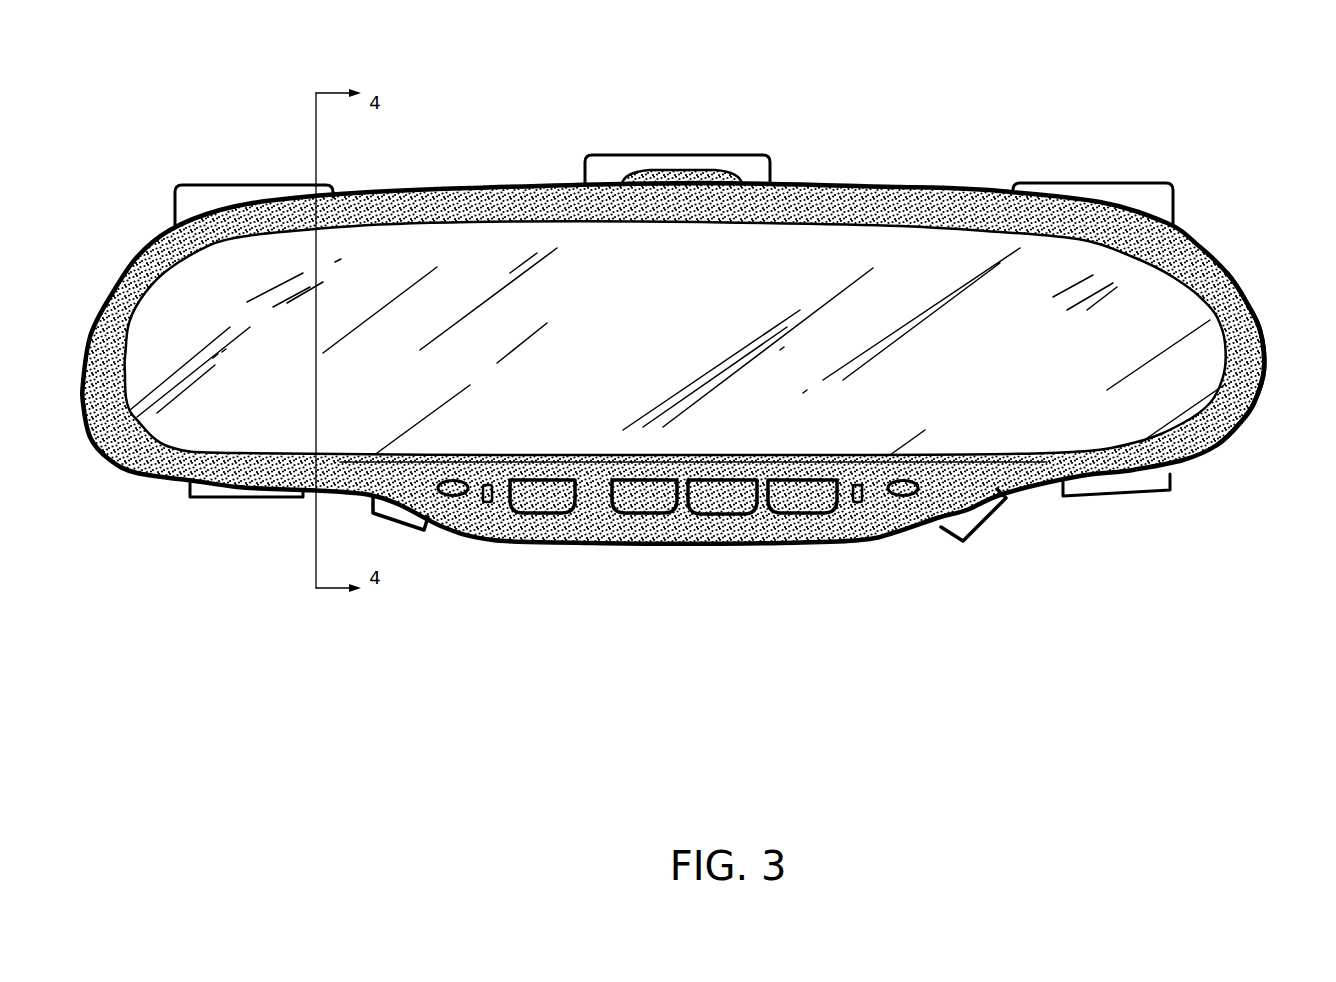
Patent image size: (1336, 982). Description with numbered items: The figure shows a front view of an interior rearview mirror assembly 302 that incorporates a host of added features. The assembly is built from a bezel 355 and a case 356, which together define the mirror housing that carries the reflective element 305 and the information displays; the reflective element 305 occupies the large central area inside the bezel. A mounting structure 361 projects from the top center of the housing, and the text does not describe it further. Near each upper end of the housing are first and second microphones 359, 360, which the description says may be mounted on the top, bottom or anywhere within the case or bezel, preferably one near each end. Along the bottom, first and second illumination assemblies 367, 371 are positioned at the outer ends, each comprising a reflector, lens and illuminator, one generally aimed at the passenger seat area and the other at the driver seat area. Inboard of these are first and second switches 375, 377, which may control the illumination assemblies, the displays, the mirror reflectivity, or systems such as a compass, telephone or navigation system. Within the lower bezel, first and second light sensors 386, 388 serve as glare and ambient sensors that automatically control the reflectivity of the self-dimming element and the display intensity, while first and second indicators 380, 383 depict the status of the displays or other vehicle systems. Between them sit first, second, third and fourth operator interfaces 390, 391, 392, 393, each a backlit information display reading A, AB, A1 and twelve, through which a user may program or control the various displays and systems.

The mirror assembly 302 is at (444, 152).
The reflective mirror element 305 is at (686, 315).
The bezel 355 is at (1220, 270).
The case 356 is at (1275, 362).
The first microphone 359 is at (207, 203).
The second microphone 360 is at (1128, 195).
The mounting bracket 361 is at (674, 166).
The first illumination assembly 367 is at (233, 489).
The second illumination assembly 371 is at (1123, 495).
The first switch 375 is at (383, 504).
The second switch 377 is at (970, 517).
The first indicator 380 is at (487, 505).
The second indicator 383 is at (858, 505).
The first light sensor 386 is at (450, 497).
The second light sensor 388 is at (905, 497).
The first operator interface 390 is at (547, 500).
The second operator interface 391 is at (647, 502).
The third operator interface 392 is at (747, 502).
The fourth operator interface 393 is at (820, 502).